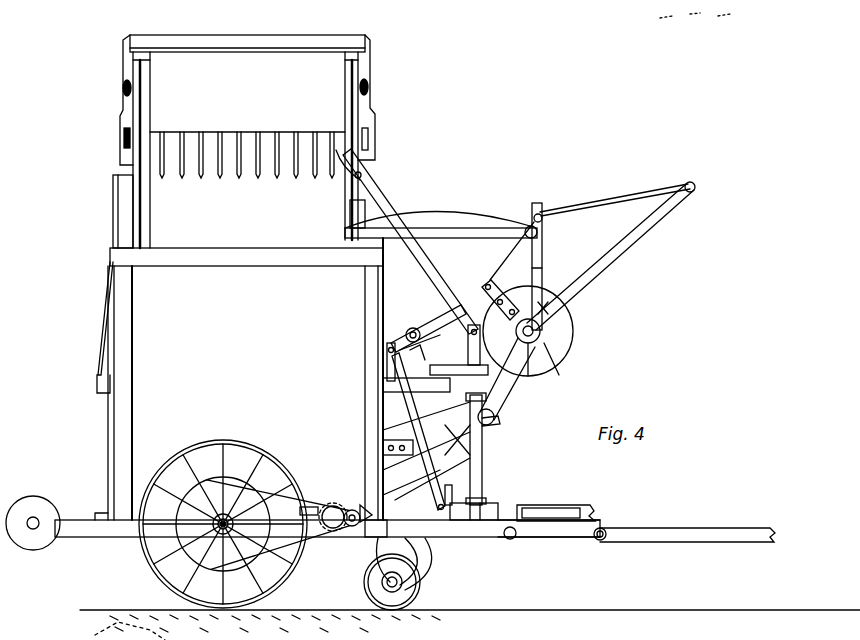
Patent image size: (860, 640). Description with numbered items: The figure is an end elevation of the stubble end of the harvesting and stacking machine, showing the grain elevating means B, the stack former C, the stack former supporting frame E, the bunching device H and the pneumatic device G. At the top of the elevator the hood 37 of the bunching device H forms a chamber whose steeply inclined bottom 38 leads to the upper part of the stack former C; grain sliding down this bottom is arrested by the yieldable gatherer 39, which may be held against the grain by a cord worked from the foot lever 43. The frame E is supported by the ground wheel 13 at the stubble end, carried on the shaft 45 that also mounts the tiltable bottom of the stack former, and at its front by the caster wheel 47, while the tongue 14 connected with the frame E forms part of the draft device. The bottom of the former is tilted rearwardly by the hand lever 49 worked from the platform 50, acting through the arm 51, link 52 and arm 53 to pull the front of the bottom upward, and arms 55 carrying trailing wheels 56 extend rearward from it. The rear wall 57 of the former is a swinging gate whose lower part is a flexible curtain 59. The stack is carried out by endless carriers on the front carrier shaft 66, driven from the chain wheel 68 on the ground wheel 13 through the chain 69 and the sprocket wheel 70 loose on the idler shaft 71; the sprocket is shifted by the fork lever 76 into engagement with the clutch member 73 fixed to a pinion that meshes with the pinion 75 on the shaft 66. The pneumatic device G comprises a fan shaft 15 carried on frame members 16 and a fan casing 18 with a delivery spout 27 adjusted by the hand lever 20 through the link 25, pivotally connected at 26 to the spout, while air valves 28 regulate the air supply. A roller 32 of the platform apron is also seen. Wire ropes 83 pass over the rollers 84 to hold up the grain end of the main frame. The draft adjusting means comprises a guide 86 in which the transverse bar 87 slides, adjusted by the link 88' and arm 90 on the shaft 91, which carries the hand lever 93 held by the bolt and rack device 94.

The hood 37 is at (568, 222).
The rollers 84 is at (124, 88).
The flexible tension devices 83 is at (124, 140).
The yieldable gatherer 39 is at (215, 170).
The bottom 38 is at (170, 226).
The hand lever 49 is at (392, 212).
The roller 32 is at (543, 244).
The air valve 28 is at (520, 298).
The arm 51 is at (440, 322).
The hand lever 20 is at (410, 346).
The rear wall 57 is at (100, 340).
The hand lever 93 is at (383, 370).
The rotary fan shaft 15 is at (541, 332).
The fan casing 18 is at (560, 348).
The frame members 16 is at (552, 361).
The link 52 is at (392, 404).
The link 25 is at (436, 378).
The platform 50 is at (500, 400).
The link 88' is at (503, 415).
The pivot connection 26 is at (482, 445).
The arm 90 is at (483, 460).
The fan delivery spout 27 is at (483, 470).
The foot lever 43 is at (486, 500).
The short longitudinal shaft 91 is at (452, 500).
The guide 86 is at (498, 508).
The ground wheel 13 is at (590, 508).
The tongue 14 is at (637, 533).
The arms 55 is at (88, 537).
The shaft 45 is at (168, 545).
The chain wheel 68 is at (175, 570).
The chain 69 is at (262, 482).
The front rotary shaft 66 is at (336, 503).
The horizontal fork lever 76 is at (320, 512).
The arm 53 is at (362, 508).
The idler or pivot shaft 71 is at (381, 532).
The pinion 75 is at (352, 530).
The bolt and rack device 94 is at (420, 538).
The transverse bar 87 is at (510, 539).
The clutch member 73 is at (290, 568).
The sprocket wheel 70 is at (368, 588).
The caster wheel 47 is at (422, 584).
The wheels 56 is at (42, 505).
The flexible curtain 59 is at (108, 460).
The stack former supporting frame E is at (108, 424).
The bunching device H is at (247, 113).
The grain elevating means B is at (242, 219).
The stack former C is at (248, 393).
The pneumatic device G is at (539, 331).